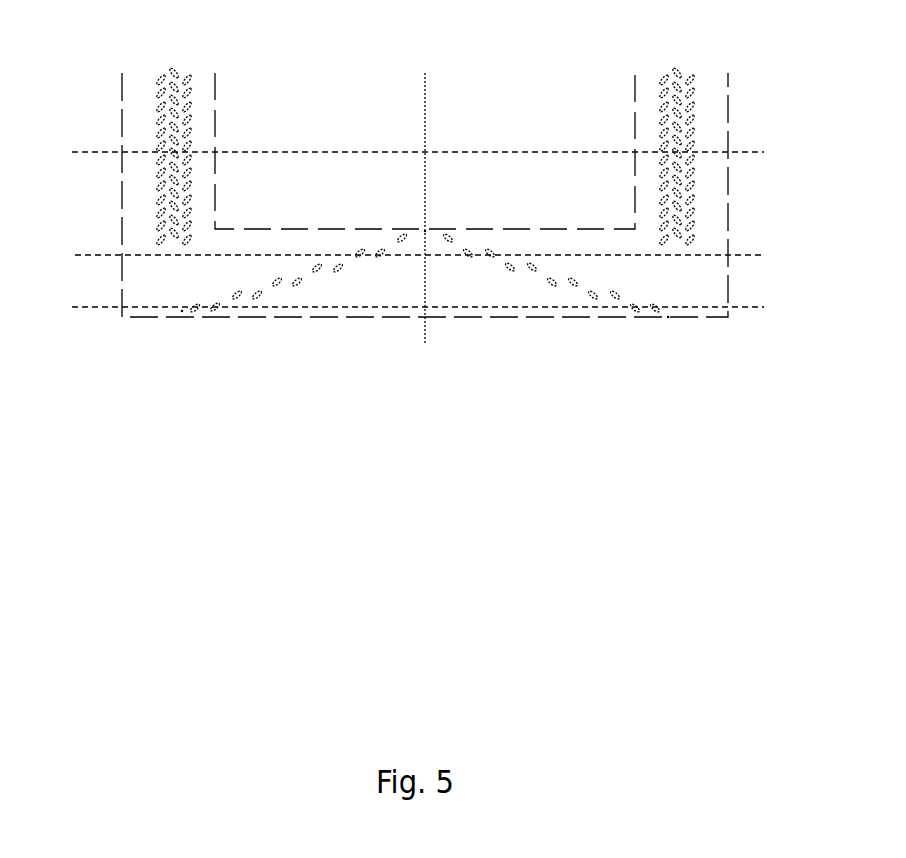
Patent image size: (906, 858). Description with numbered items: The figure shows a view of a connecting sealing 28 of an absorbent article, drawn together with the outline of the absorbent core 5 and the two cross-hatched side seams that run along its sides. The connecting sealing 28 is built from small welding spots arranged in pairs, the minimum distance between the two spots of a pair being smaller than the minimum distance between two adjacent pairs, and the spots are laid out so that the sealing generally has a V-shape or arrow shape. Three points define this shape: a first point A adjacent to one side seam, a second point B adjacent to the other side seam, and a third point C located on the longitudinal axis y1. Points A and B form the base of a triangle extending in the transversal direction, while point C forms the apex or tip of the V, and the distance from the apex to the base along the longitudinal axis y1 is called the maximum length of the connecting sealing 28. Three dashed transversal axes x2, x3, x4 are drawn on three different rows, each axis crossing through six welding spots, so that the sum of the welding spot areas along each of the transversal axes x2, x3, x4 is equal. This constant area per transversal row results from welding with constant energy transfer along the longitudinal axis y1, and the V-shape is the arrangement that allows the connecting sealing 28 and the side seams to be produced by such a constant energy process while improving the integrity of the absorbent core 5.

The absorbent core 5 is at (215, 229).
The second connecting sealing 28 is at (277, 283).
The first point A is at (182, 311).
The second point B is at (668, 317).
The third point C is at (425, 231).
The transversal axis x2 is at (436, 153).
The transversal axis x3 is at (438, 257).
The transversal axis x4 is at (439, 308).
The longitudinal axis y1 is at (420, 332).